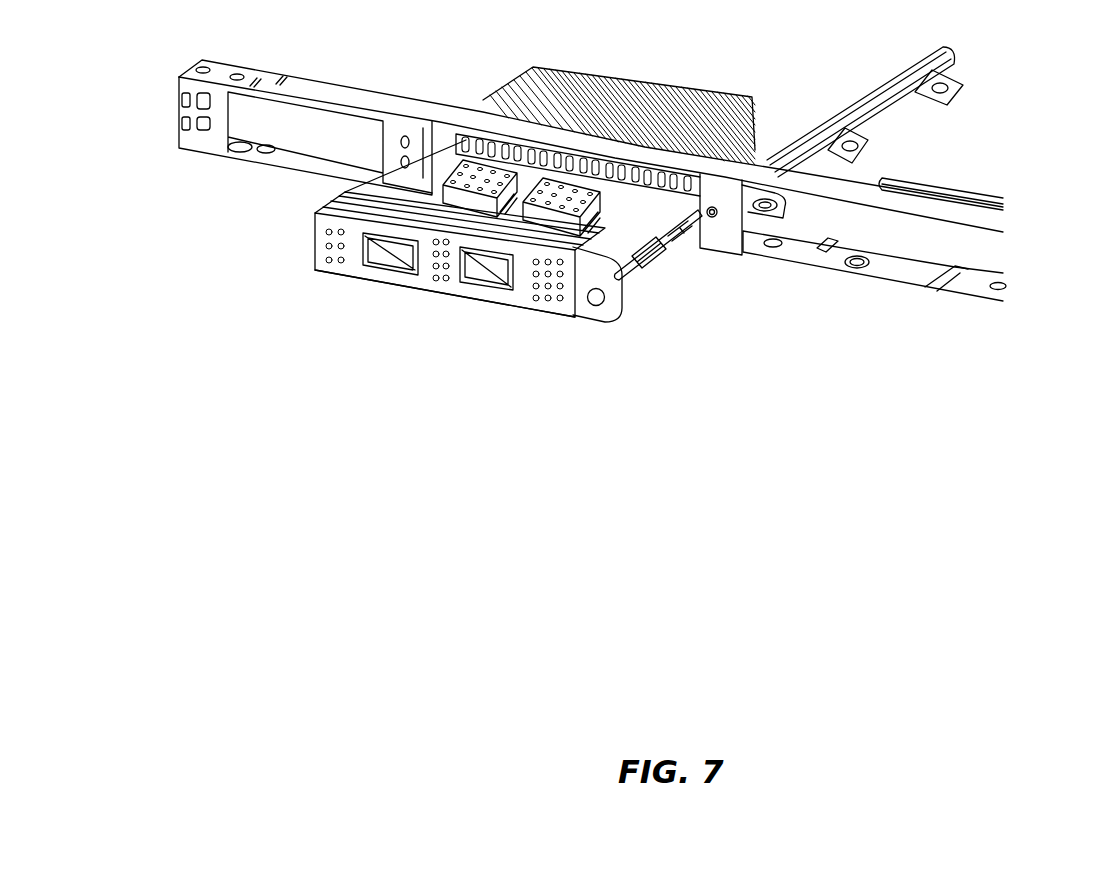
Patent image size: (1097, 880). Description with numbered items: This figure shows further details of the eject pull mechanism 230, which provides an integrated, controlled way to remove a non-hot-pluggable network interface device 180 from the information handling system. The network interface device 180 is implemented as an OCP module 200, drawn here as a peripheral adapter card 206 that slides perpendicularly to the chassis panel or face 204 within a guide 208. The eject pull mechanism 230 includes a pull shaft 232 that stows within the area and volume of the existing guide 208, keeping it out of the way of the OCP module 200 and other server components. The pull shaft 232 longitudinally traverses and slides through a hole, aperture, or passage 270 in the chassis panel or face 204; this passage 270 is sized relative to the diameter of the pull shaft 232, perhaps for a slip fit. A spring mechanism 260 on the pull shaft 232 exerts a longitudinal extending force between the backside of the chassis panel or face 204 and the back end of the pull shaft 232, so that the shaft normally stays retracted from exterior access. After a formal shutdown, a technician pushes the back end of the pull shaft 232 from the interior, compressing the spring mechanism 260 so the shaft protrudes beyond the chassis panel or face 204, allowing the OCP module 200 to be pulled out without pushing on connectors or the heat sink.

The chassis panel or face 204 is at (197, 150).
The guide 208 is at (885, 81).
The network interface device 180 is at (433, 311).
The OCP module 200 is at (458, 259).
The peripheral adapter card 206 is at (467, 283).
The pull shaft 232 is at (633, 278).
The spring mechanism 260 is at (674, 276).
The hole, aperture, or passage 270 is at (715, 214).
The eject pull mechanism 230 is at (857, 290).